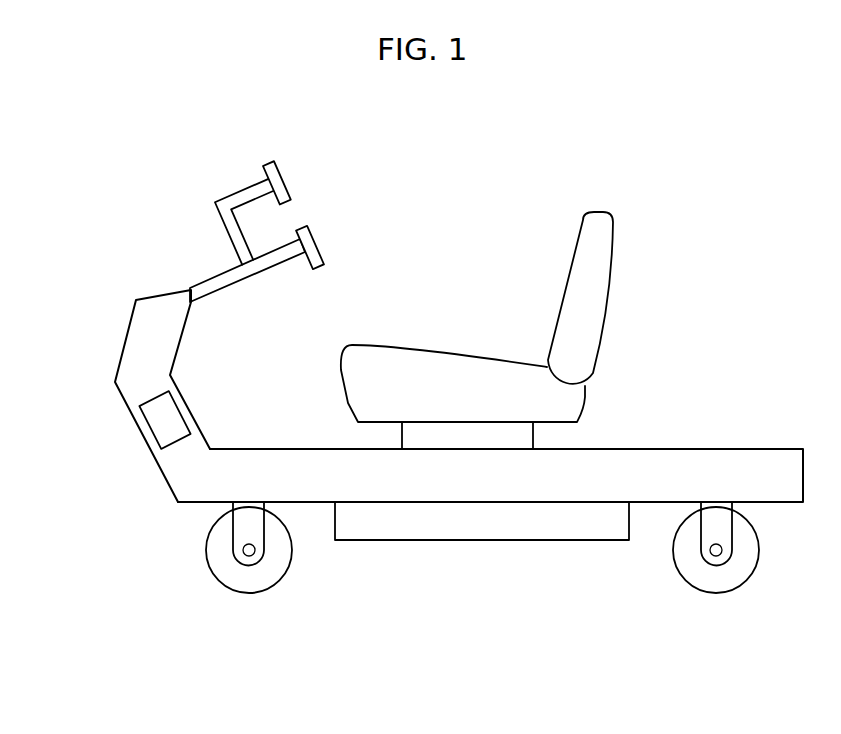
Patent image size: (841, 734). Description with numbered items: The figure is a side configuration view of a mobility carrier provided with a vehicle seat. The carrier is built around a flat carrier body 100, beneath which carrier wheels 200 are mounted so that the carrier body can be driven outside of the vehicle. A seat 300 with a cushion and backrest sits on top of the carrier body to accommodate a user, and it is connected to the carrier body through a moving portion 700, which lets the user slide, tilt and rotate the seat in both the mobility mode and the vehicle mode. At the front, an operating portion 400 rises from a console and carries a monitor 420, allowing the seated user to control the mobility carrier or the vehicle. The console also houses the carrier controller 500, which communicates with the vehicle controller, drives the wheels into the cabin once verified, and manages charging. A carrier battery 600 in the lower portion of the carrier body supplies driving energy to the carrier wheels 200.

The carrier body 100 is at (712, 458).
The carrier wheels 200 is at (717, 583).
The seat 300 is at (605, 265).
The operating portion 400 is at (320, 245).
The monitor 420 is at (287, 173).
The carrier controller 500 is at (160, 425).
The carrier battery 600 is at (518, 533).
The moving portion 700 is at (450, 437).